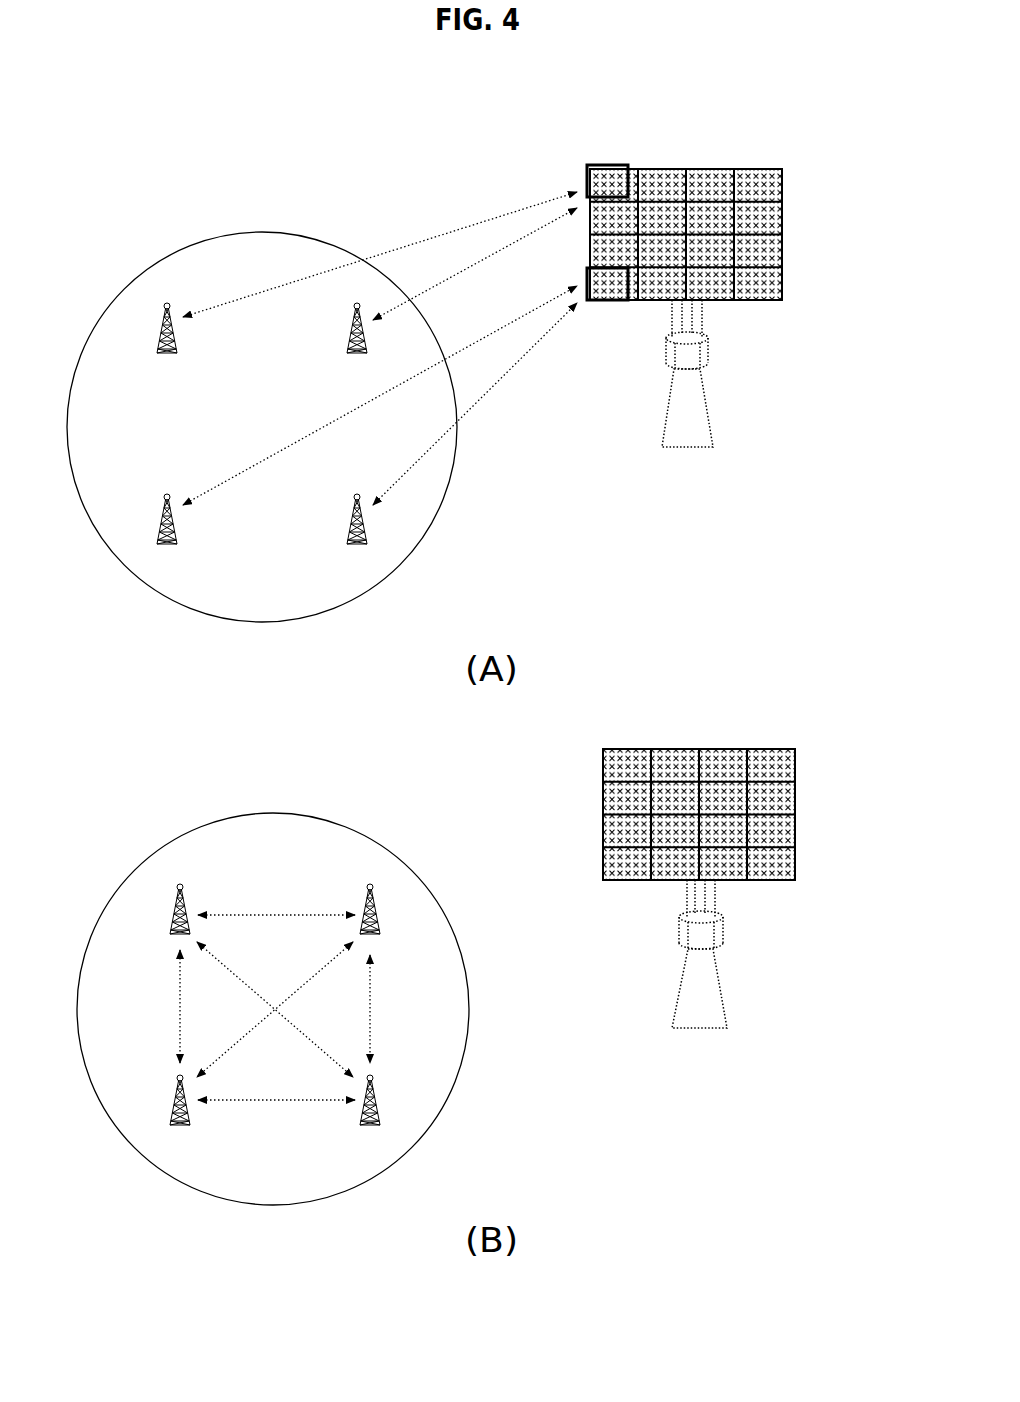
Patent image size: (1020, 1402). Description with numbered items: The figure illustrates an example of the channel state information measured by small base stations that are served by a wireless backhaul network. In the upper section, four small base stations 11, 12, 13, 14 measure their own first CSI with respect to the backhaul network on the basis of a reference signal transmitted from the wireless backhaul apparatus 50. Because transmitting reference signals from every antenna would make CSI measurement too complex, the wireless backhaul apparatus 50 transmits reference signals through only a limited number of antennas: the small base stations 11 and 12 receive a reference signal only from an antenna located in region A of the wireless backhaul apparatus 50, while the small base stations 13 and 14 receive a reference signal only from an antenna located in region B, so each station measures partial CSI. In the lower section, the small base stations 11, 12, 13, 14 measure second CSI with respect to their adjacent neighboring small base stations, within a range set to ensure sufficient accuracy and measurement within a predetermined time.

The small base station 11 is at (150, 308).
The small base station 12 is at (385, 345).
The small base station 13 is at (143, 538).
The small base station 14 is at (380, 545).
The wireless backhaul apparatus 50 is at (787, 180).
The region A is at (612, 163).
The region B is at (592, 308).